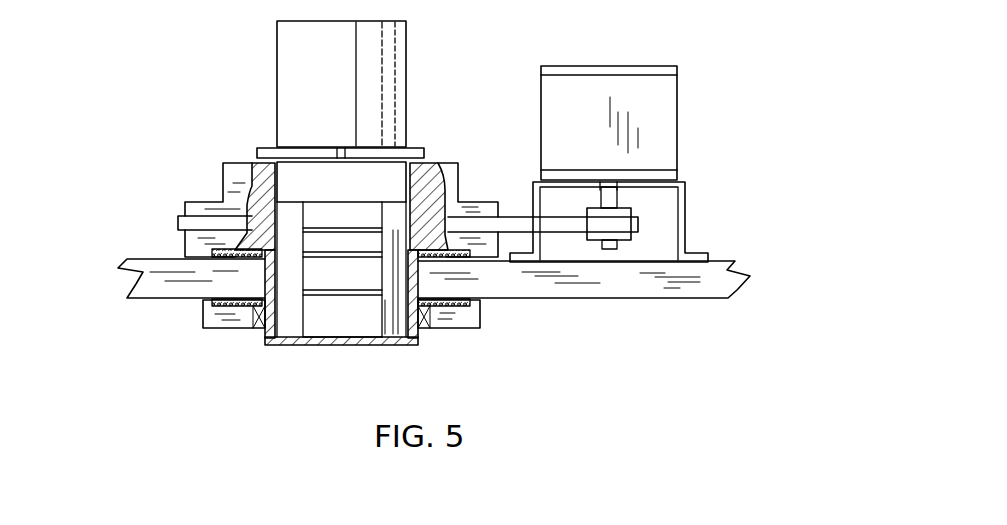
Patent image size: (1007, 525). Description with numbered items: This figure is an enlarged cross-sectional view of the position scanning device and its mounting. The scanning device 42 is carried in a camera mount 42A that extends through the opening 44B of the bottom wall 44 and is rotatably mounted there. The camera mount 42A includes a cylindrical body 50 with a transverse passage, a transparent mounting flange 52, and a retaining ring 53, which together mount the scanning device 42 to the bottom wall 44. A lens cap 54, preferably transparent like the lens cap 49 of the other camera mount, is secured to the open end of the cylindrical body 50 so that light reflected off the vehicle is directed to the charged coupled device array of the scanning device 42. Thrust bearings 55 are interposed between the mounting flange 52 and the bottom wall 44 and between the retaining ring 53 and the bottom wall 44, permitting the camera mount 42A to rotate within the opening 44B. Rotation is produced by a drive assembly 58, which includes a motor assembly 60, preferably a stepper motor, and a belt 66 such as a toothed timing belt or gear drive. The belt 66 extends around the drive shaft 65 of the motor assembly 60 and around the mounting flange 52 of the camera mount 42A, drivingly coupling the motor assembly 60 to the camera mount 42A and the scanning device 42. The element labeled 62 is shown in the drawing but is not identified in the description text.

The scanning device 42 is at (425, 86).
The camera mount 42A is at (468, 172).
The bottom wall 44 is at (703, 289).
The opening 44B is at (260, 327).
The lens cap 49 is at (200, 8).
The cylindrical body 50 is at (237, 170).
The mounting flange 52 is at (185, 237).
The retaining ring 53 is at (465, 320).
The lens cap 54 is at (333, 347).
The thrust bearings 55 is at (212, 253).
The drive assembly 58 is at (670, 143).
The motor assembly 60 is at (677, 127).
The mounting bracket 62 is at (685, 219).
The drive shaft 65 is at (620, 200).
The belt 66 is at (178, 222).